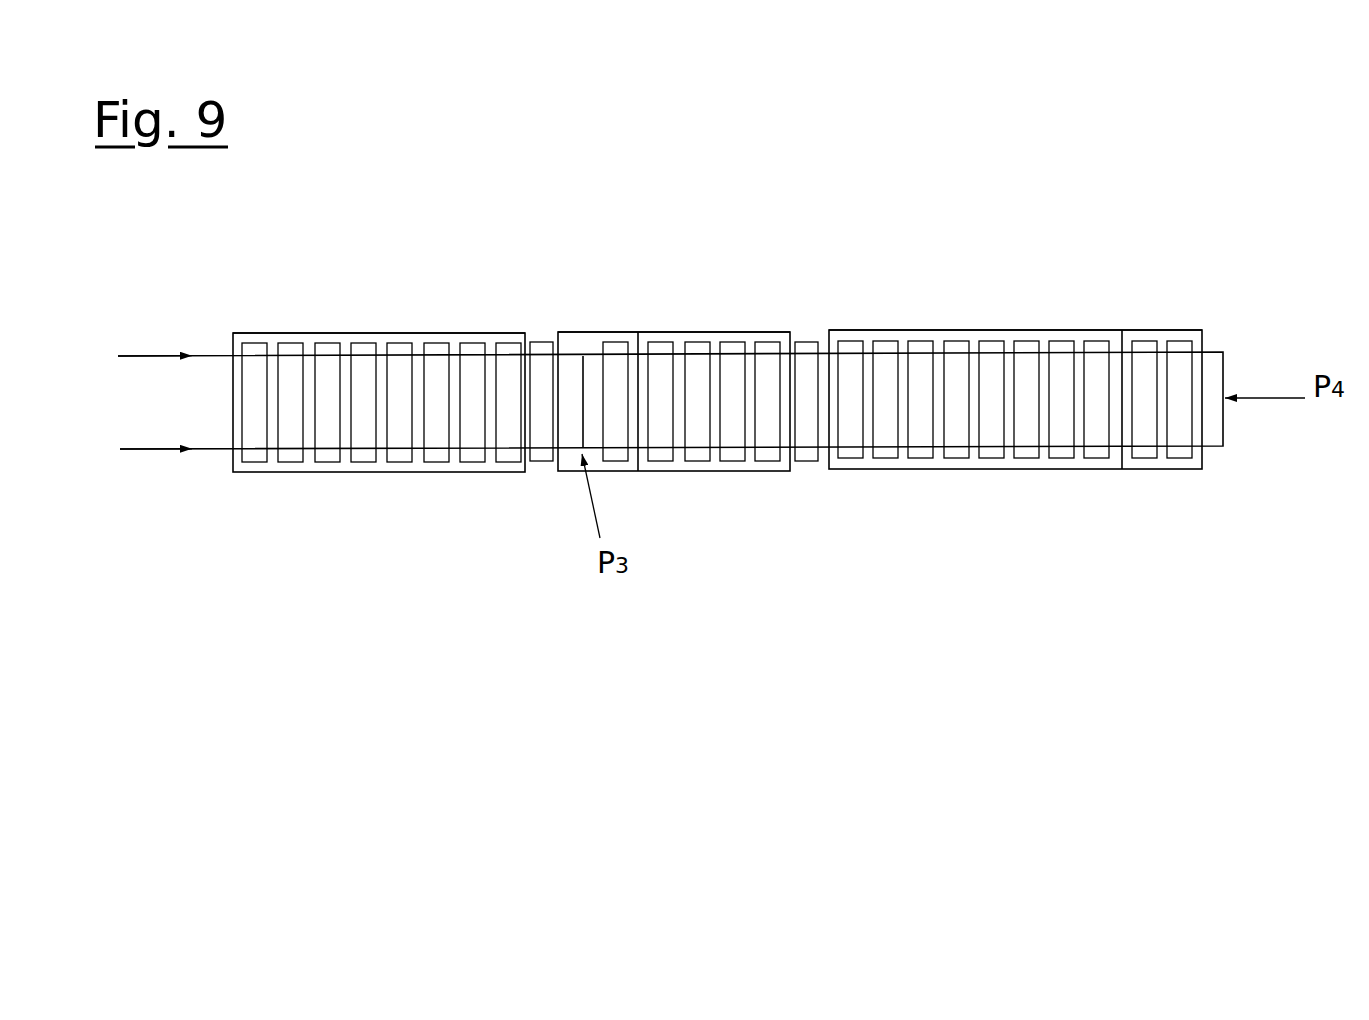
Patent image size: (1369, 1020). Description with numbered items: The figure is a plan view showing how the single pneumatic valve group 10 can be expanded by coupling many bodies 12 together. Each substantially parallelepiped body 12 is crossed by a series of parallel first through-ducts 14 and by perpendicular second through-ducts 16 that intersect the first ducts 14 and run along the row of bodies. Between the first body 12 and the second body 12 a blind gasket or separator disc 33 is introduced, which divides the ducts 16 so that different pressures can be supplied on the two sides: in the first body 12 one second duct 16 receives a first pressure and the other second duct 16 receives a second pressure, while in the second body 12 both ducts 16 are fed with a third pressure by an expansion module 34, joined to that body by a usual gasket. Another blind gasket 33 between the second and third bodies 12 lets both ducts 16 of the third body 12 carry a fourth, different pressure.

The pneumatic valve group 10 is at (373, 474).
The body 12 is at (383, 338).
The first through-ducts 14 is at (365, 348).
The second through-ducts 16 is at (208, 355).
The blind gasket with separator disc 33 is at (542, 347).
The expansion module 34 is at (636, 475).